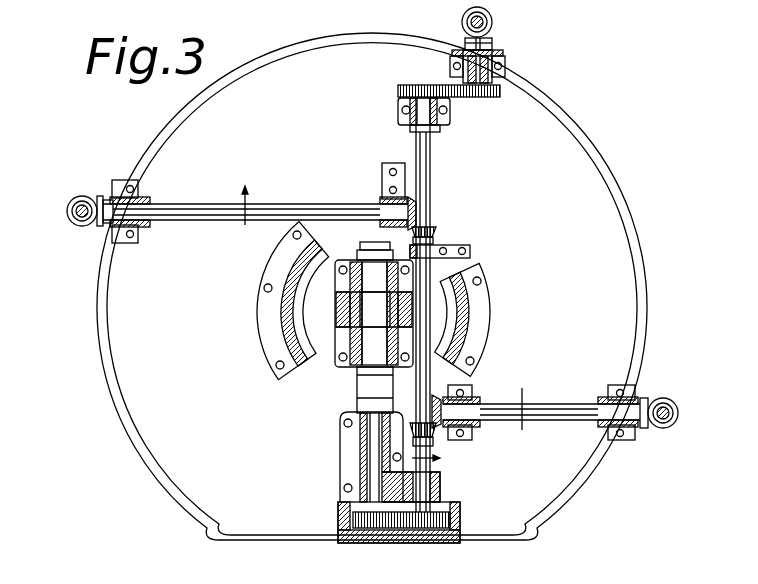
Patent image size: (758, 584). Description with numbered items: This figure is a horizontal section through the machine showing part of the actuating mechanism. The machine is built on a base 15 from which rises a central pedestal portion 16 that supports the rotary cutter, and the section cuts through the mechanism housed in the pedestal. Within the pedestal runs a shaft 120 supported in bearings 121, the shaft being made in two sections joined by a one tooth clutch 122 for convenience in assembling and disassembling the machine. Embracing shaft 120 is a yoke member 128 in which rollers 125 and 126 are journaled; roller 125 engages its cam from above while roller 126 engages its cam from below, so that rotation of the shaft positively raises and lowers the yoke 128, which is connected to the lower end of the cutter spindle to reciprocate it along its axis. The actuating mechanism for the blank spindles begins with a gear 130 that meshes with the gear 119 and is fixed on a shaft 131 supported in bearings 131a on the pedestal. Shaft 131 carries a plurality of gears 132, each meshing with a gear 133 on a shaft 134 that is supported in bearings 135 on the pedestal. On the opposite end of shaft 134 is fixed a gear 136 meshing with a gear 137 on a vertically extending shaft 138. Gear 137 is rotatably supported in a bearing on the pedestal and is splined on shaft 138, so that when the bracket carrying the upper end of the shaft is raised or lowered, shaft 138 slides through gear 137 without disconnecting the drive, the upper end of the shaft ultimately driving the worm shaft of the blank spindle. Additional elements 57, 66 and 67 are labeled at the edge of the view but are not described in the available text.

The base 15 is at (372, 286).
The central pedestal portion 16 is at (290, 262).
The base member 57 is at (261, 577).
The support 66 is at (561, 576).
The frame member 67 is at (498, 577).
The gear 119 is at (352, 515).
The shaft 120 is at (374, 463).
The bearings 121 is at (358, 430).
The one tooth clutch 122 is at (360, 390).
The roller 125 is at (352, 298).
The roller 126 is at (372, 318).
The yoke member 128 is at (372, 303).
The gear 130 is at (423, 521).
The shaft 131 is at (437, 463).
The bearings 131a is at (440, 490).
The gears 132 is at (399, 92).
The gear 133 is at (503, 96).
The shaft 134 is at (451, 64).
The bearings 135 is at (505, 62).
The gear 136 is at (493, 40).
The gear 137 is at (466, 14).
The vertically extending shaft 138 is at (494, 17).